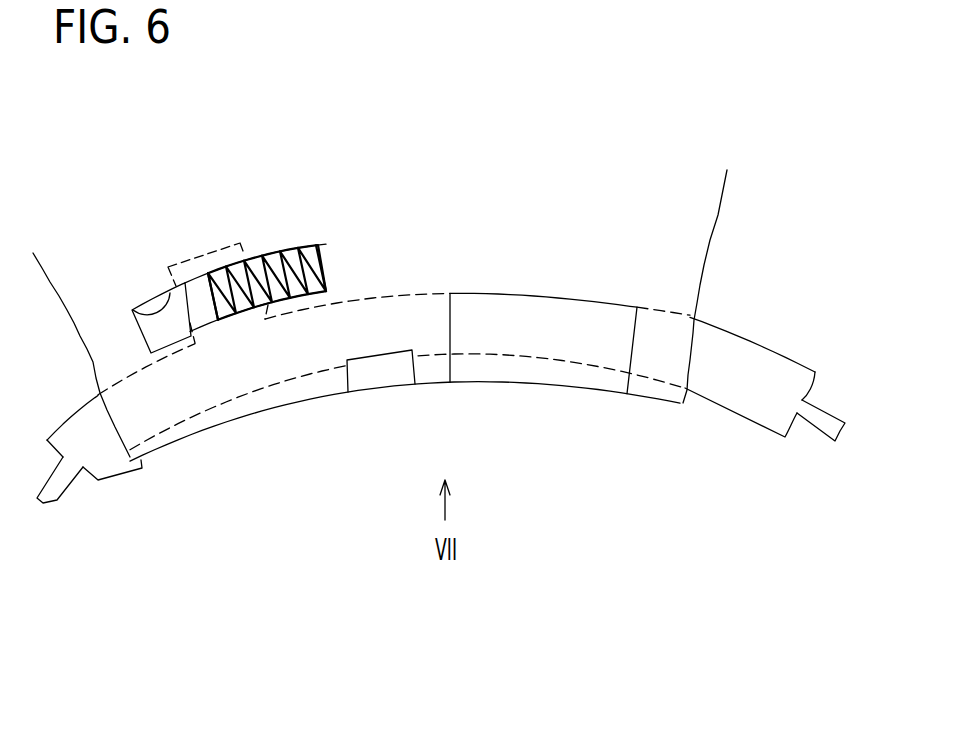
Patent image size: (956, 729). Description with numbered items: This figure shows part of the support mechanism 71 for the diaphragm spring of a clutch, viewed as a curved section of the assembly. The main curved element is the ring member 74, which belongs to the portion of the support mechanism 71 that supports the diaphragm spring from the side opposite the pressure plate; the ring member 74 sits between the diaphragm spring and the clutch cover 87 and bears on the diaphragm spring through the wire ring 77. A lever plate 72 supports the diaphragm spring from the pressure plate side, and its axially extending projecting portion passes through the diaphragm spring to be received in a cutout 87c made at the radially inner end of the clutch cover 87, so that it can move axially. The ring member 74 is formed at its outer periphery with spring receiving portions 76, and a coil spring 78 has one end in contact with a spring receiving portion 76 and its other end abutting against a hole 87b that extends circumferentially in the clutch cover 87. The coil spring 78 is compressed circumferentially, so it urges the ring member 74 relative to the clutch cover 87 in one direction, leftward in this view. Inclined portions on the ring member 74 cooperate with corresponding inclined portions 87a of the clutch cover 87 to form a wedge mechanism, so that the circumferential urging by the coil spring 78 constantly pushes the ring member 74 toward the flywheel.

The support mechanism 71 is at (563, 420).
The lever plate 72 is at (382, 368).
The ring member 74 is at (737, 388).
The spring receiving portions 76 is at (200, 262).
The wire ring 77 is at (65, 482).
The coil spring 78 is at (228, 246).
The clutch cover 87 is at (662, 259).
The inclined portions 87a is at (528, 313).
The holes 87b is at (133, 310).
The cutout 87c is at (347, 375).